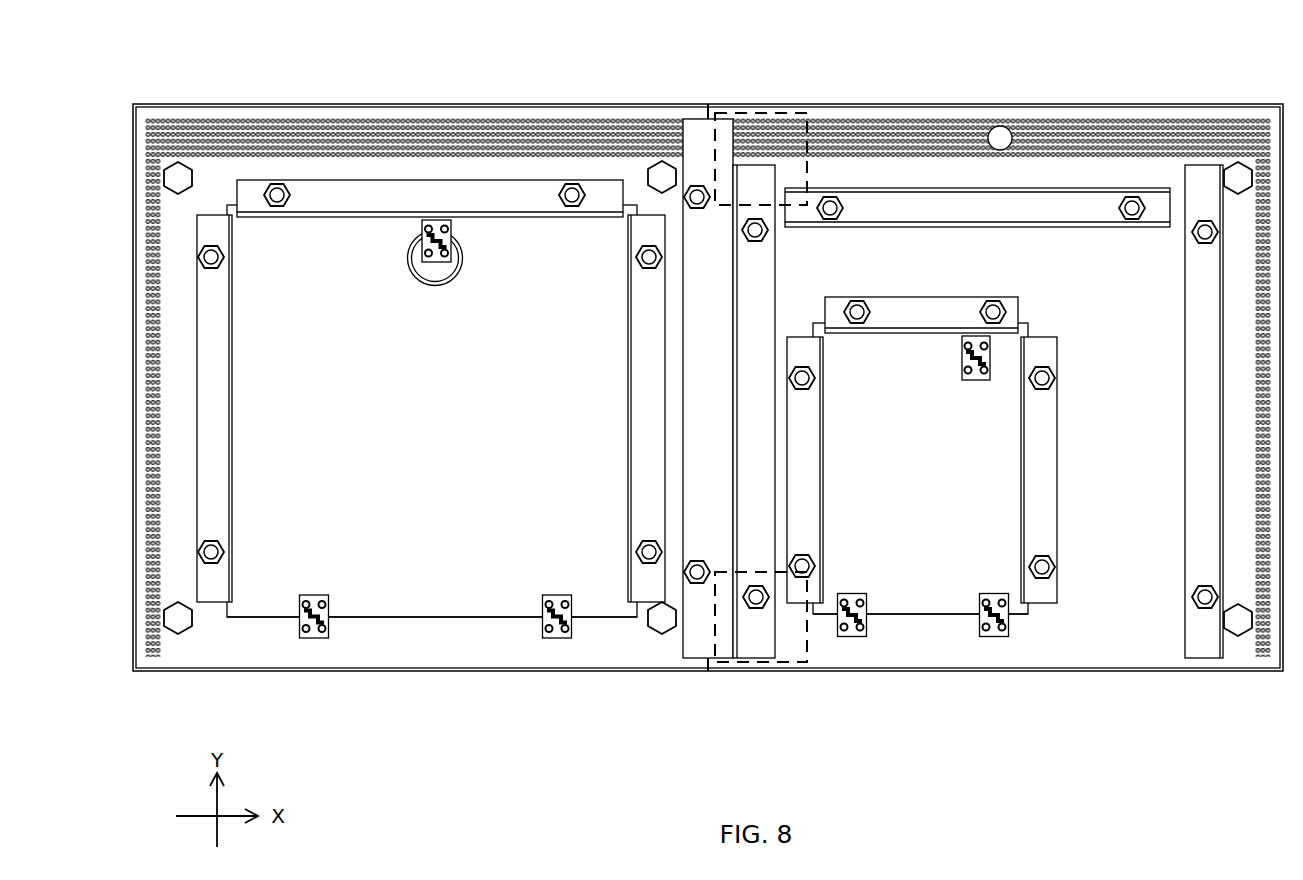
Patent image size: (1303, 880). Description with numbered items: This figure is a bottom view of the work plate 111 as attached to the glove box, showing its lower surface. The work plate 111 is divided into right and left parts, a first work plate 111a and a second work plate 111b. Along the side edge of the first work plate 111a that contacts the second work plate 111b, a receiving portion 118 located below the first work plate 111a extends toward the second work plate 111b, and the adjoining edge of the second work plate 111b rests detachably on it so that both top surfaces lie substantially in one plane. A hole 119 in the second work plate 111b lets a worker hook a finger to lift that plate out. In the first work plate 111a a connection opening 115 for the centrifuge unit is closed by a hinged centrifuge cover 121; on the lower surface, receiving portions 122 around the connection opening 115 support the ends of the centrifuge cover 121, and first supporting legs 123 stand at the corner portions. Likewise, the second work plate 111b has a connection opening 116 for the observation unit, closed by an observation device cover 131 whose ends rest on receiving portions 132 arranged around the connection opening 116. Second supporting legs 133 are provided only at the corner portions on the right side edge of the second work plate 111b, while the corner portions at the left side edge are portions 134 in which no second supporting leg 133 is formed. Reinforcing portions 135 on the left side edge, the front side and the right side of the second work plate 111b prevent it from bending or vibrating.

The work plate 111 is at (241, 60).
The first work plate 111a is at (470, 105).
The second work plate 111b is at (853, 105).
The connection opening 115 is at (415, 620).
The connection opening 116 is at (958, 615).
The receiving portion 118 is at (693, 155).
The hole 119 is at (1005, 125).
The centrifuge cover 121 is at (385, 495).
The receiving portions 122 is at (512, 193).
The first supporting legs 123 is at (178, 177).
The observation device cover 131 is at (915, 550).
The receiving portions 132 is at (918, 312).
The second supporting legs 133 is at (1240, 178).
The portions in which no second supporting leg is formed 134 is at (760, 108).
The reinforcing portion 135 is at (755, 295).